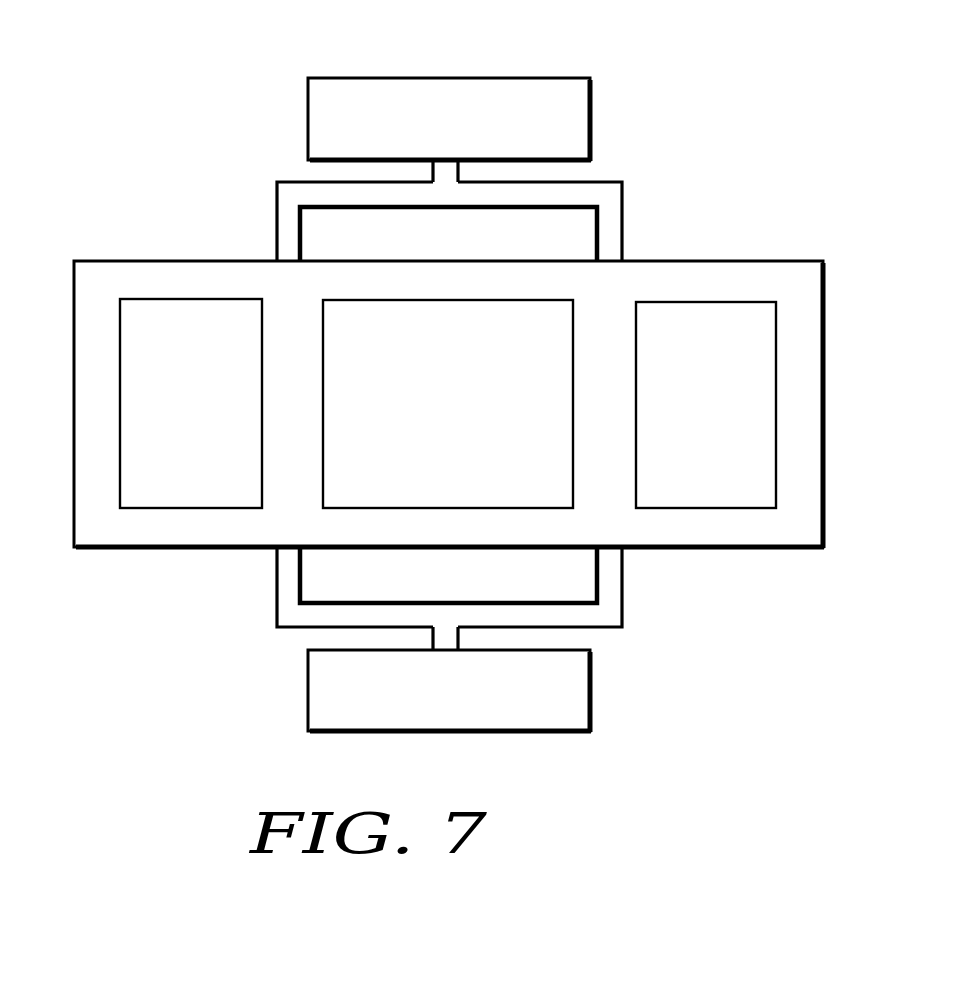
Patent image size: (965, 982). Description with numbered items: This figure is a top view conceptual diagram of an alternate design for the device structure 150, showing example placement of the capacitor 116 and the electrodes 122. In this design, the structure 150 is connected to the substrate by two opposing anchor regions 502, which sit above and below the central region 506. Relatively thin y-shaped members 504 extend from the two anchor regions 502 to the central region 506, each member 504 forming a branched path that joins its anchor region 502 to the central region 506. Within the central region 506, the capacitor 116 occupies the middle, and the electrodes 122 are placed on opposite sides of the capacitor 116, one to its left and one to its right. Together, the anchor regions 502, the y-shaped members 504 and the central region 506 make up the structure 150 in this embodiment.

The structure 150 is at (858, 80).
The anchor region 502 is at (470, 134).
The y-shaped member 504 is at (630, 216).
The central region 506 is at (810, 355).
The capacitor 116 is at (468, 420).
The electrode 122 is at (203, 420).